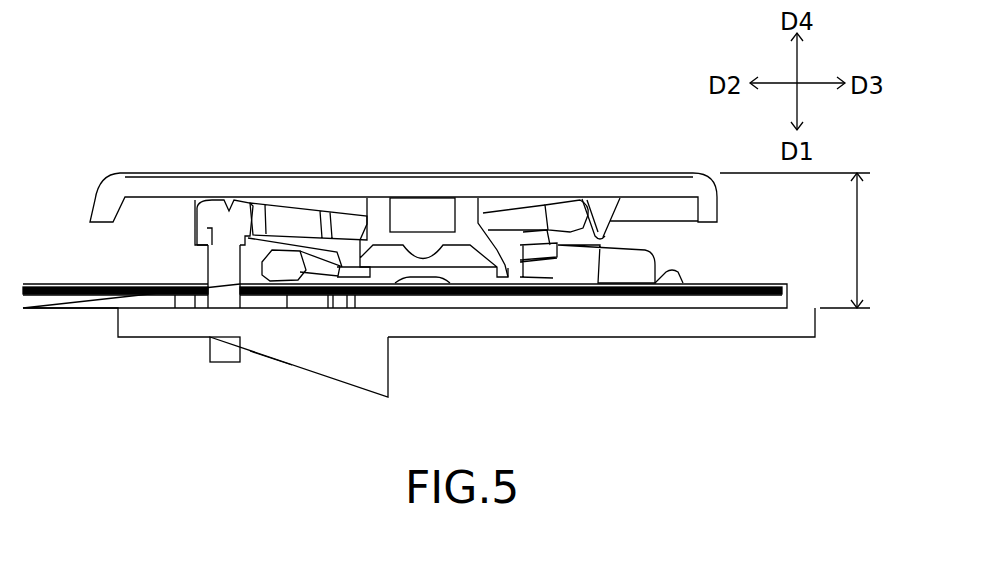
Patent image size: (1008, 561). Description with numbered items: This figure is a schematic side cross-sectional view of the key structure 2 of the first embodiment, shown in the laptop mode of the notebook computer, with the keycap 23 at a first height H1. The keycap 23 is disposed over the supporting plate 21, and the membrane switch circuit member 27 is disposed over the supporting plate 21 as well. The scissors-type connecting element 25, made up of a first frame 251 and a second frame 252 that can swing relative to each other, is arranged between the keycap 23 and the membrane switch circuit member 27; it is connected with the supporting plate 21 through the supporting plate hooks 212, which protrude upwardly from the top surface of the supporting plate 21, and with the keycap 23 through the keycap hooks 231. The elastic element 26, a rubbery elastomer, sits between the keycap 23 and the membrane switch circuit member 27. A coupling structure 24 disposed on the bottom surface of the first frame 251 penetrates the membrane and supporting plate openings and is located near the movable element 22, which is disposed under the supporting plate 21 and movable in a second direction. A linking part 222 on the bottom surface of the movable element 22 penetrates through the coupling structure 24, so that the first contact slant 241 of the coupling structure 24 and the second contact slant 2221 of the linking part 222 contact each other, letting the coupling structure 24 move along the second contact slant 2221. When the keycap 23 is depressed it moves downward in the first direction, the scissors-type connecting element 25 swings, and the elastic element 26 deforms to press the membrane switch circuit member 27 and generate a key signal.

The key structure 2 is at (278, 114).
The supporting plate 21 is at (781, 286).
The movable element 22 is at (594, 321).
The keycap 23 is at (565, 163).
The coupling structure 24 is at (223, 293).
The scissors-type connecting element 25 is at (231, 208).
The elastic element 26 is at (465, 208).
The membrane switch circuit member 27 is at (743, 283).
The supporting plate hook 212 is at (668, 270).
The linking part 222 is at (373, 373).
The keycap hook 231 is at (600, 210).
The first contact slant 241 is at (218, 339).
The first frame 251 is at (298, 220).
The second frame 252 is at (345, 250).
The second contact slant 2221 is at (291, 364).
The first height H1 is at (810, 240).